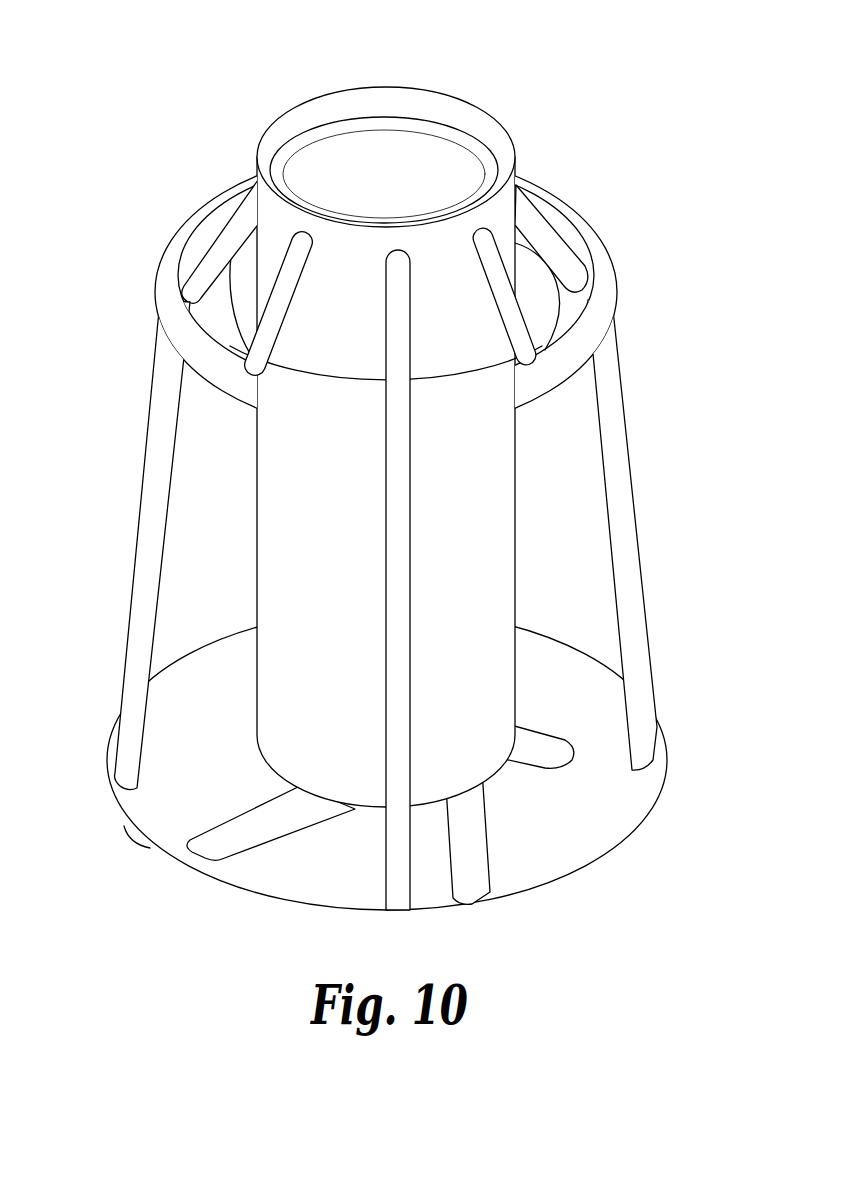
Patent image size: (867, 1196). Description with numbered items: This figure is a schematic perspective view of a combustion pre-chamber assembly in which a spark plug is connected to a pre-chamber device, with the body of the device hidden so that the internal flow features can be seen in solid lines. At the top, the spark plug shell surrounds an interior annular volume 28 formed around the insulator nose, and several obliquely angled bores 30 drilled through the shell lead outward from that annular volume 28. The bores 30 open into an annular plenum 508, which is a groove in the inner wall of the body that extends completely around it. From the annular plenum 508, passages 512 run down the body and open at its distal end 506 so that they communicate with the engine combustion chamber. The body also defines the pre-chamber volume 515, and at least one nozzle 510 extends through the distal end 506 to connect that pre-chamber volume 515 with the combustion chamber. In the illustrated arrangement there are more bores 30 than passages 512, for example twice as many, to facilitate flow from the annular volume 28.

The interior annular volume 28 is at (452, 195).
The bore 30 is at (414, 303).
The distal end 506 is at (150, 846).
The annular plenum 508 is at (577, 340).
The nozzle 510 is at (535, 748).
The passage 512 is at (152, 423).
The pre-chamber volume 515 is at (300, 547).